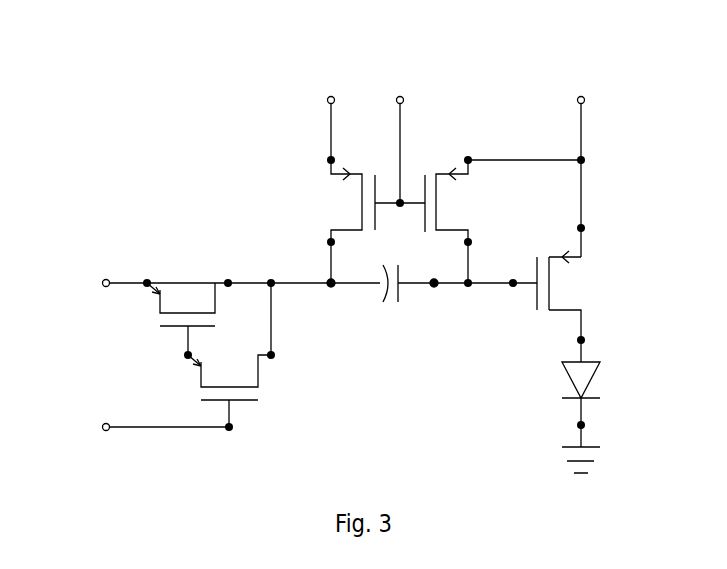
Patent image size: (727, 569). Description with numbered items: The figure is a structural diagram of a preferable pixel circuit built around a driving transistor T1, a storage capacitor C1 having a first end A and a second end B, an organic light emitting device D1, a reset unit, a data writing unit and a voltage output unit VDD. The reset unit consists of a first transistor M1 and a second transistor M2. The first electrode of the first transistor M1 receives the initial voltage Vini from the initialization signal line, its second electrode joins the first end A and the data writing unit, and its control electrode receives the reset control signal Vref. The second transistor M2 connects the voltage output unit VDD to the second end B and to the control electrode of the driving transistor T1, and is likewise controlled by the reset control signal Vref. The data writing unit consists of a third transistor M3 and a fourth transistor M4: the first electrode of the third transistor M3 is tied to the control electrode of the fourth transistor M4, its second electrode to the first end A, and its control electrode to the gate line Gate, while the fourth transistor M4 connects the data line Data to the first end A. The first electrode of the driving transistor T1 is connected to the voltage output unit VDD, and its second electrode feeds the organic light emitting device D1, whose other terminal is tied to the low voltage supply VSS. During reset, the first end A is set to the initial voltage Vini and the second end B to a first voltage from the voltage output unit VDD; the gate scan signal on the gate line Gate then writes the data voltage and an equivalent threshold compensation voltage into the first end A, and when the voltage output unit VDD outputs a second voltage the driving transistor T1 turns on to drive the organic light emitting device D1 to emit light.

The first transistor M1 is at (359, 201).
The second transistor M2 is at (437, 201).
The third transistor M3 is at (229, 391).
The fourth transistor M4 is at (181, 318).
The storage capacitor C1 is at (389, 270).
The driving transistor T1 is at (571, 295).
The organic light emitting device D1 is at (598, 382).
The first end A is at (331, 303).
The second end B is at (434, 303).
The data line Data is at (77, 283).
The gate line Gate is at (137, 427).
The initial voltage Vini is at (328, 114).
The reset control signal Vref is at (399, 136).
The voltage output unit VDD is at (534, 163).
The low voltage supply VSS is at (581, 465).